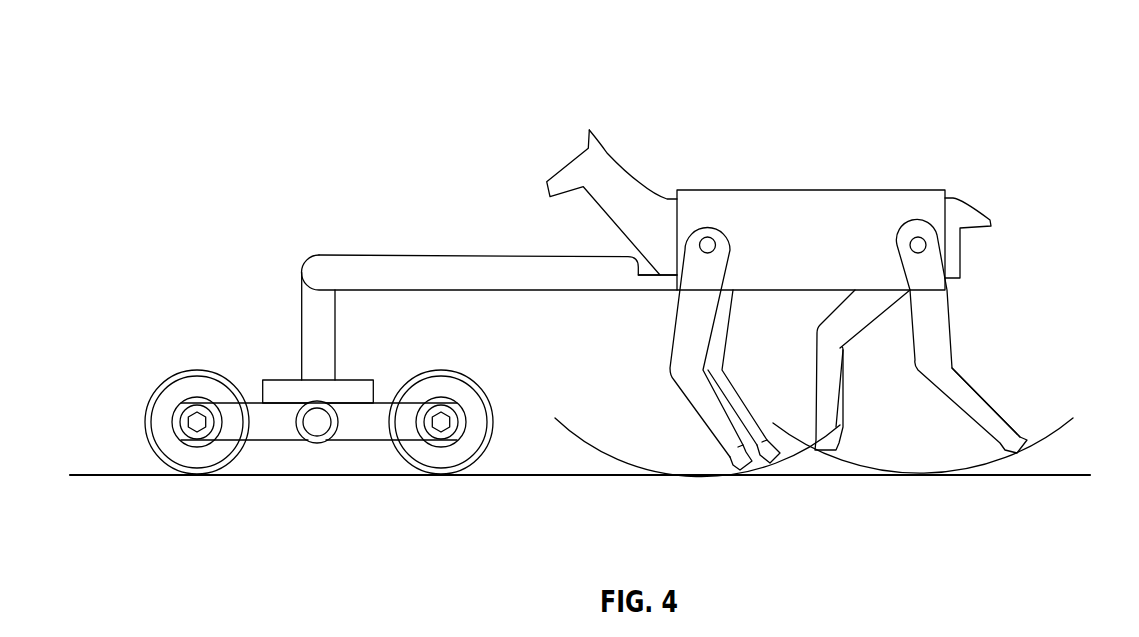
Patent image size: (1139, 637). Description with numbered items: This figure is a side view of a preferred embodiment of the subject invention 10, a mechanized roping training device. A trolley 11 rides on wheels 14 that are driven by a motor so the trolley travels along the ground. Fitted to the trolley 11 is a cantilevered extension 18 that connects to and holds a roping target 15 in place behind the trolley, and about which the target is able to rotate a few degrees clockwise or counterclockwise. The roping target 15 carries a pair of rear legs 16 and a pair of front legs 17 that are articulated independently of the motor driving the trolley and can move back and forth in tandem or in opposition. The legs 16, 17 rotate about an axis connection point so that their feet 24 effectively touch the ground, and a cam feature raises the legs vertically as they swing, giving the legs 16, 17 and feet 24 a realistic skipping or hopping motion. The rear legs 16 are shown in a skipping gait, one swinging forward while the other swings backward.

The subject invention 10 is at (268, 77).
The trolley 11 is at (181, 287).
The wheels 14 is at (440, 370).
The roping target 15 is at (896, 139).
The rear legs 16 is at (837, 407).
The front legs 17 is at (708, 413).
The cantilevered extension 18 is at (400, 255).
The feet 24 is at (738, 467).